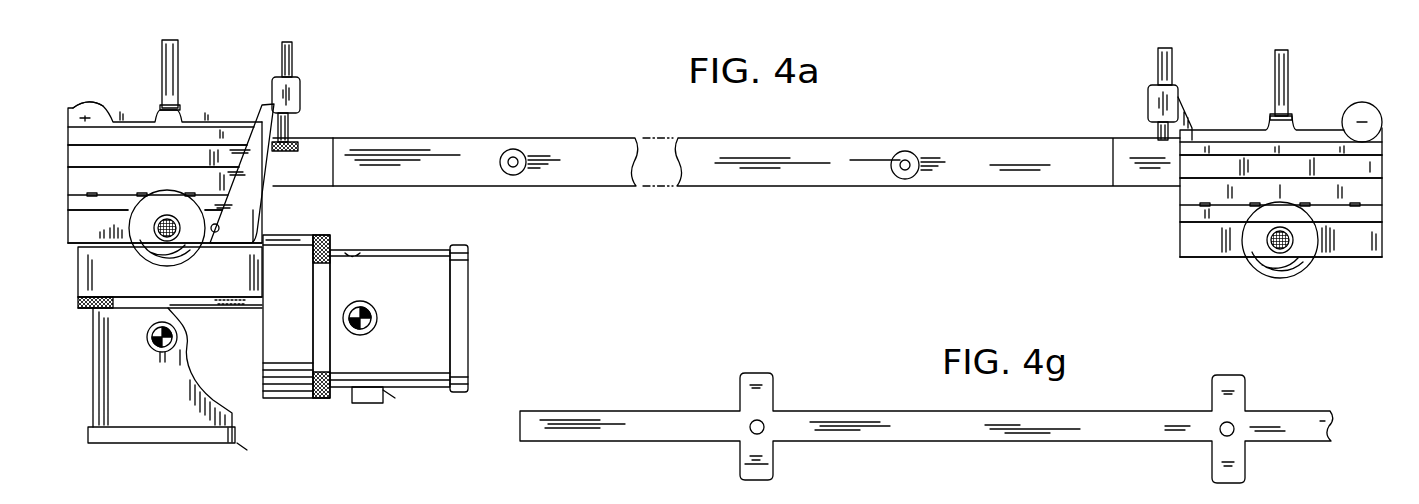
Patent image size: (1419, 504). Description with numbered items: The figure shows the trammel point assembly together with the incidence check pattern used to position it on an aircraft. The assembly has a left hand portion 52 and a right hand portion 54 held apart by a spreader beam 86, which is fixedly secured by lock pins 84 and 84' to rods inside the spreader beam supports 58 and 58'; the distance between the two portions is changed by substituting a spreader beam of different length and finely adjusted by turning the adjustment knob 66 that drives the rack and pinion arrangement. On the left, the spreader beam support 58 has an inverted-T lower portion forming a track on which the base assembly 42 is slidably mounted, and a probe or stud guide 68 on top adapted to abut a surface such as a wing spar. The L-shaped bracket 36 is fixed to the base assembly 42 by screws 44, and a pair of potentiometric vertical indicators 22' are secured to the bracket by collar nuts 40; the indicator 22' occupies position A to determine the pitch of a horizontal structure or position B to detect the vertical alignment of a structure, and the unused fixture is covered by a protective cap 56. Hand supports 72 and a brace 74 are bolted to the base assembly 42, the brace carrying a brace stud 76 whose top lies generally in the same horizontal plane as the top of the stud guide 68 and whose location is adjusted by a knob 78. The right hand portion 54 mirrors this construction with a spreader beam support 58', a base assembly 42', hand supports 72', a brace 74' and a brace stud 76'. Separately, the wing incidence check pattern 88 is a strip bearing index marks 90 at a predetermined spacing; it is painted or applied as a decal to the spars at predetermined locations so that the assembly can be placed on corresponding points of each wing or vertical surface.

In FIG. 4A, the left hand portion 52 is at (90, 53).
In FIG. 4A, the right hand portion 54 is at (1227, 63).
In FIG. 4A, the adjustment knob 66 is at (92, 102).
In FIG. 4A, the probe or stud guide 68 is at (163, 55).
In FIG. 4A, the brace stud 76 is at (303, 58).
In FIG. 4A, the brace 74 is at (305, 105).
In FIG. 4A, the knob 78 is at (298, 146).
In FIG. 4A, the screws 44 is at (187, 192).
In FIG. 4A, the spreader beam support 58 is at (157, 157).
In FIG. 4A, the base assembly 42 is at (165, 226).
In FIG. 4A, the hand supports 72 is at (167, 228).
In FIG. 4A, the L-shaped bracket 36 is at (170, 277).
In FIG. 4A, the collar nuts 40 is at (80, 308).
In FIG. 4A, the protective cap 56 is at (210, 307).
In FIG. 4A, the potentiometric vertical indicator 22' is at (282, 347).
In FIG. 4A, the lock pin 84 is at (532, 184).
In FIG. 4A, the lock pin 84' is at (899, 185).
In FIG. 4A, the spreader beam 86 is at (592, 188).
In FIG. 4A, the brace stud 76' is at (1140, 66).
In FIG. 4A, the brace 74' is at (1151, 112).
In FIG. 4A, the spreader beam support 58' is at (1281, 167).
In FIG. 4A, the base assembly 42' is at (1281, 239).
In FIG. 4A, the hand supports 72' is at (1281, 257).
In FIG. 4A, the position A is at (376, 319).
In FIG. 4A, the position B is at (162, 379).
In FIG. 4G, the wing incidence check pattern 88 is at (1188, 452).
In FIG. 4G, the index marks 90 is at (768, 429).